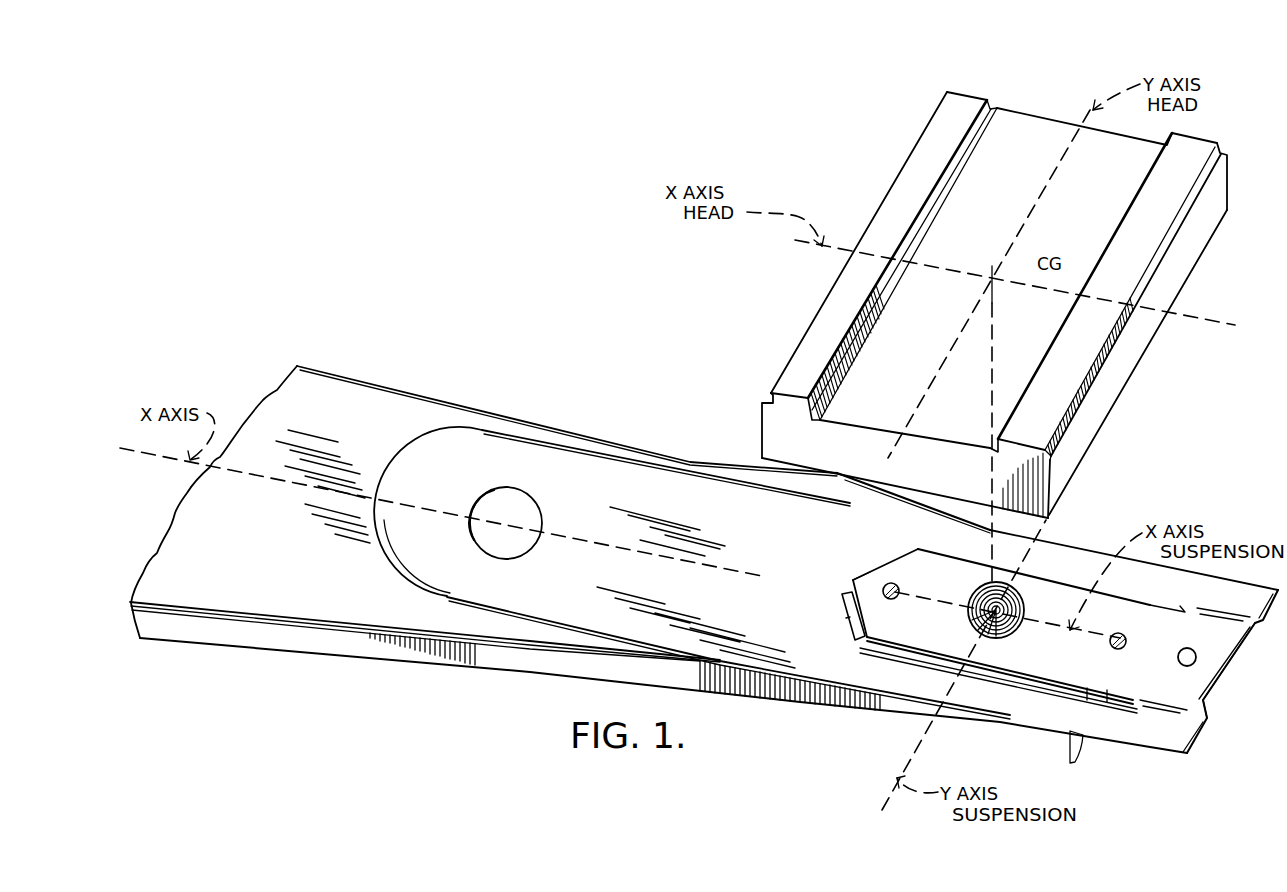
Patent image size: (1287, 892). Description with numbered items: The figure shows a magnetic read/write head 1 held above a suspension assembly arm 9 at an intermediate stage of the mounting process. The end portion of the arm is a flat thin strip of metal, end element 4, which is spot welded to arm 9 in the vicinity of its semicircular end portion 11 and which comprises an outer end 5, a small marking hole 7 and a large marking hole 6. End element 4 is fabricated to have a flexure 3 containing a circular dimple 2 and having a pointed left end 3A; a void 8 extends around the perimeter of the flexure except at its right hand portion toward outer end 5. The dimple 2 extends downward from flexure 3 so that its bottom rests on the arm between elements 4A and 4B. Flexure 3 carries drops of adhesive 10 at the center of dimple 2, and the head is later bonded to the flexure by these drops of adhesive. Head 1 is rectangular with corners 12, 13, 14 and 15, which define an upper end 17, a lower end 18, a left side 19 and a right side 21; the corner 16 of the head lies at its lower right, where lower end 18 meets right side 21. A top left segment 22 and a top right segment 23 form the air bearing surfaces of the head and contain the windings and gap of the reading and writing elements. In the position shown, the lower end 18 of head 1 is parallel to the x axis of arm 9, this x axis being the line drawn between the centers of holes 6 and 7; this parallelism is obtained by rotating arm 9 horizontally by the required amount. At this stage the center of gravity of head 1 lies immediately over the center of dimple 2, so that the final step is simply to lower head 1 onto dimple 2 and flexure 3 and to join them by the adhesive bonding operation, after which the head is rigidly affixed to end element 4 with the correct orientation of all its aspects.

The magnetic head 1 is at (1217, 254).
The dimple 2 is at (1022, 610).
The flexure 3 is at (1062, 664).
The pointed left end 3A is at (853, 580).
The end element 4 is at (880, 697).
The element 4A is at (1082, 583).
The element 4B is at (1025, 708).
The outer end 5 is at (1222, 676).
The large marking hole 6 is at (534, 507).
The small marking hole 7 is at (1194, 652).
The void 8 is at (843, 614).
The suspension assembly arm 9 is at (305, 553).
The drops of adhesive 10 is at (985, 617).
The semicircular end portion 11 is at (380, 480).
The corner 12 is at (946, 102).
The corner 13 is at (1228, 178).
The corner 14 is at (762, 458).
The corner 15 is at (899, 589).
The slider trailing corner 16 is at (1050, 518).
The upper end 17 is at (1063, 123).
The lower end 18 is at (840, 476).
The left side 19 is at (812, 318).
The right side 21 is at (1140, 360).
The top left segment 22 is at (927, 177).
The top right segment 23 is at (1150, 205).